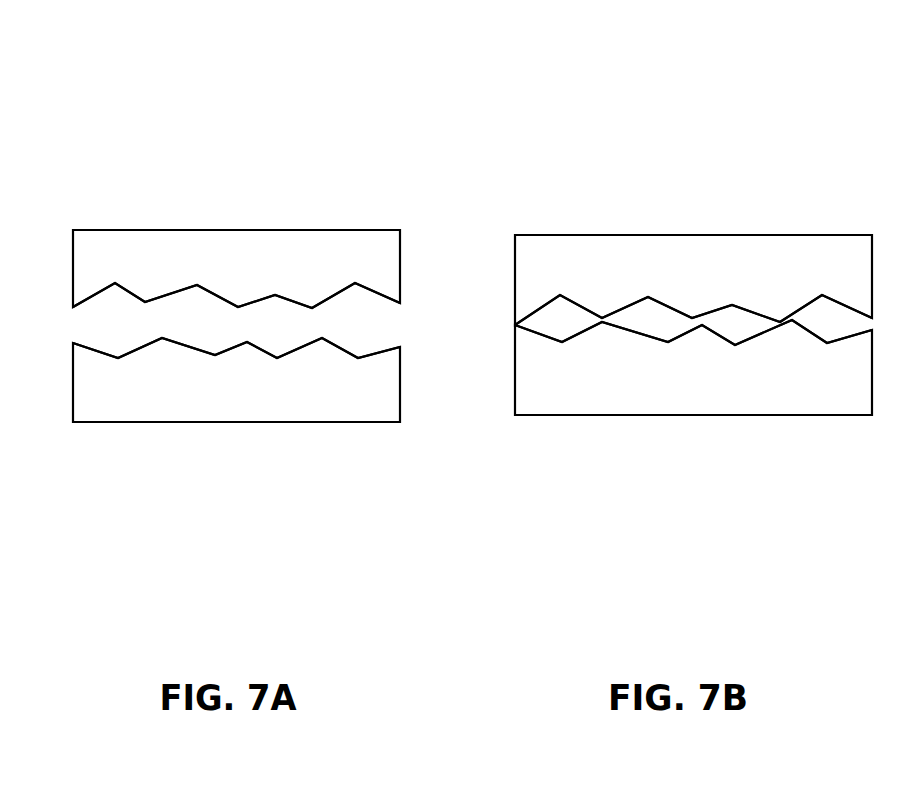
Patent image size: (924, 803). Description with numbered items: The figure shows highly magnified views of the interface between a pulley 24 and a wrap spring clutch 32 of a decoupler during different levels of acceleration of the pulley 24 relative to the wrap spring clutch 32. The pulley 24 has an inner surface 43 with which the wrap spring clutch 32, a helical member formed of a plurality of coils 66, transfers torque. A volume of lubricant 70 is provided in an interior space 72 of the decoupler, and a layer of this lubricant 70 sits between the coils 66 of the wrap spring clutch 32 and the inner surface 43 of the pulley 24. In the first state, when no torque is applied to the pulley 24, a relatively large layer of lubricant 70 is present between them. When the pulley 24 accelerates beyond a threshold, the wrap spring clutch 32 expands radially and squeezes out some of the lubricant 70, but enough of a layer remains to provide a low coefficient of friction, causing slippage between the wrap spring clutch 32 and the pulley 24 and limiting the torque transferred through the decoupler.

In FIG. 7A, the pulley 24 is at (253, 243).
In FIG. 7B, the pulley 24 is at (685, 250).
In FIG. 7A, the wrap spring clutch 32 is at (310, 412).
In FIG. 7B, the wrap spring clutch 32 is at (795, 382).
In FIG. 7A, the lubricant 70 is at (198, 320).
In FIG. 7B, the lubricant 70 is at (648, 317).
In FIG. 7A, the inner surface 43 is at (142, 298).
In FIG. 7B, the inner surface 43 is at (722, 308).
In FIG. 7A, the coils 66 is at (328, 337).
In FIG. 7B, the coils 66 is at (760, 337).
In FIG. 7A, the interior space 72 is at (262, 338).
In FIG. 7B, the interior space 72 is at (547, 331).